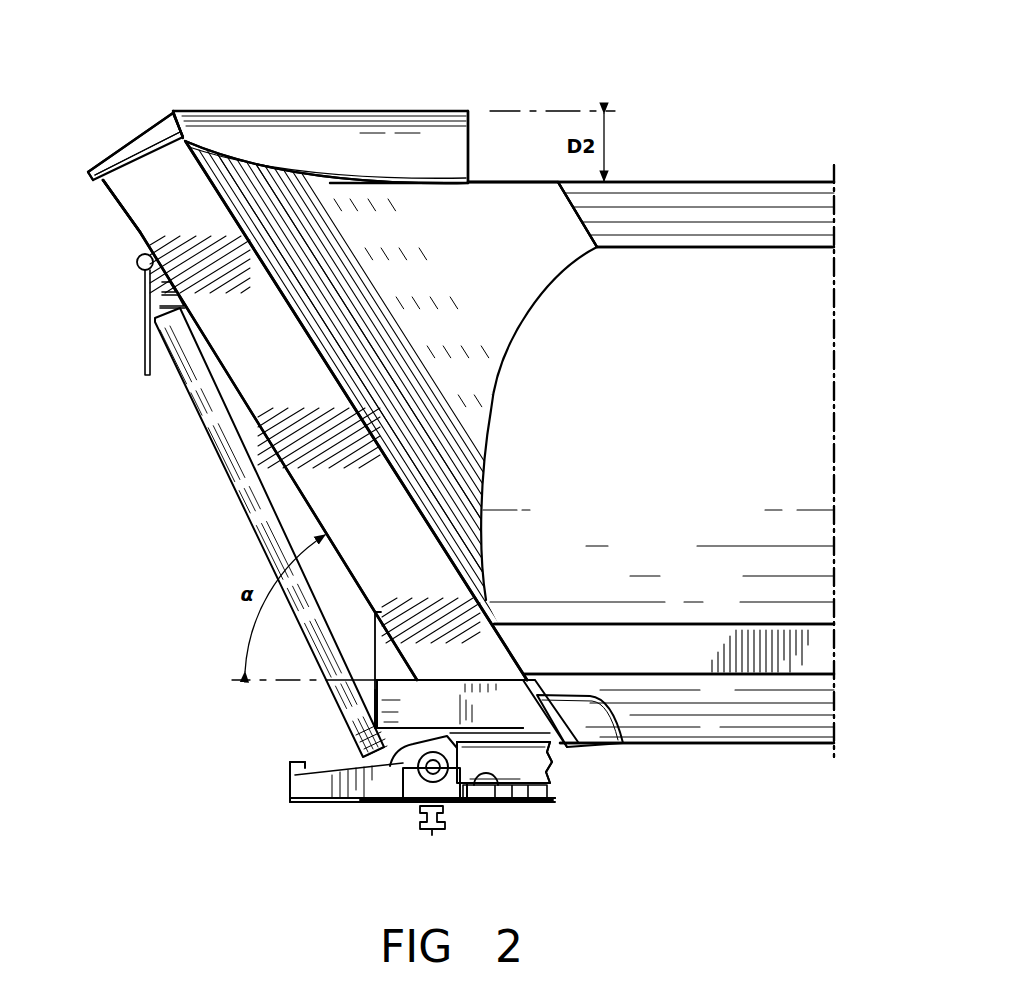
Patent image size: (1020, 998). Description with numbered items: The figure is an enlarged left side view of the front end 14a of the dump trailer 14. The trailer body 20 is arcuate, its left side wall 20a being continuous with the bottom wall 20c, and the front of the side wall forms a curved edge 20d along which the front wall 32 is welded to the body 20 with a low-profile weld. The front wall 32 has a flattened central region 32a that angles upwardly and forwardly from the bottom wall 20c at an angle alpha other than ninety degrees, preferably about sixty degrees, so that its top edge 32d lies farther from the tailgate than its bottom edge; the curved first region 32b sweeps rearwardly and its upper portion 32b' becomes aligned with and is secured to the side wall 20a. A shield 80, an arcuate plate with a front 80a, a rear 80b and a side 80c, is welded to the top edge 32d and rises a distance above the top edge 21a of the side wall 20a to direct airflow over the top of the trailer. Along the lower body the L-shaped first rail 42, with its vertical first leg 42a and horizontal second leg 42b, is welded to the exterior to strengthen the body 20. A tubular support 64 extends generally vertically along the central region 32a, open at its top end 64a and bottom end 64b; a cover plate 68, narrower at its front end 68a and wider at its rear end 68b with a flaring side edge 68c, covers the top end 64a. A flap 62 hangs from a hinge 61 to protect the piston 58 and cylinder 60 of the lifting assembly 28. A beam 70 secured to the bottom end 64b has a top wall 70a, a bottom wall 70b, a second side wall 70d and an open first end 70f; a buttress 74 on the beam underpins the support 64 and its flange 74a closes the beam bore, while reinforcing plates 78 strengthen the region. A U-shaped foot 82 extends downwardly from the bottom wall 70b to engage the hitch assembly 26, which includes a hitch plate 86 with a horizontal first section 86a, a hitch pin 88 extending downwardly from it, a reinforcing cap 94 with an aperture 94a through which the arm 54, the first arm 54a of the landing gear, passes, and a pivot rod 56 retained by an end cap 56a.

The dump trailer 14 is at (722, 130).
The front end 14a is at (148, 94).
The trailer body 20 is at (753, 290).
The left side wall 20a is at (658, 454).
The bottom wall 20c is at (760, 745).
The curved edge 20d is at (523, 315).
The top edge 21a is at (655, 180).
The hitch assembly 26 is at (347, 818).
The lifting assembly 28 is at (226, 484).
The front wall 32 is at (489, 387).
The central region 32a is at (290, 307).
The curved first region 32b is at (389, 400).
The upper portion 32b' is at (609, 236).
The top edge 32d is at (510, 181).
The first rail 42 is at (665, 628).
The vertical first leg 42a is at (713, 640).
The horizontal second leg 42b is at (680, 676).
The arm 54 is at (562, 774).
The first arm 54a is at (556, 795).
The pivot rod 56 is at (400, 803).
The end cap 56a is at (448, 802).
The piston 58 is at (162, 296).
The cylinder 60 is at (205, 428).
The hinge 61 is at (138, 262).
The flap 62 is at (146, 342).
The support 64 is at (302, 494).
The top end 64a is at (135, 184).
The bottom end 64b is at (422, 648).
The cover plate 68 is at (112, 150).
The front end 68a is at (88, 175).
The rear end 68b is at (184, 140).
The side edge 68c is at (158, 150).
The beam 70 is at (447, 674).
The top wall 70a is at (467, 678).
The bottom wall 70b is at (541, 720).
The second side wall 70d is at (497, 646).
The first end 70f is at (373, 690).
The buttress 74 is at (372, 661).
The flange 74a is at (373, 706).
The reinforcing plates 78 is at (532, 688).
The shield 80 is at (300, 108).
The front 80a is at (172, 114).
The rear 80b is at (470, 118).
The side 80c is at (403, 187).
The U-shaped foot 82 is at (396, 727).
The hitch plate 86 is at (402, 800).
The first section 86a is at (316, 803).
The hitch pin 88 is at (430, 836).
The reinforcing cap 94 is at (452, 722).
The aperture 94a is at (492, 800).